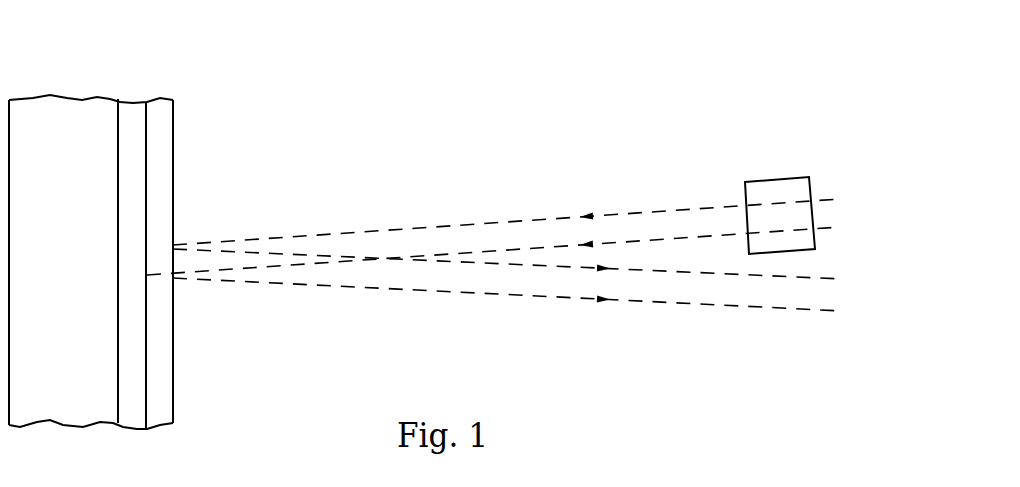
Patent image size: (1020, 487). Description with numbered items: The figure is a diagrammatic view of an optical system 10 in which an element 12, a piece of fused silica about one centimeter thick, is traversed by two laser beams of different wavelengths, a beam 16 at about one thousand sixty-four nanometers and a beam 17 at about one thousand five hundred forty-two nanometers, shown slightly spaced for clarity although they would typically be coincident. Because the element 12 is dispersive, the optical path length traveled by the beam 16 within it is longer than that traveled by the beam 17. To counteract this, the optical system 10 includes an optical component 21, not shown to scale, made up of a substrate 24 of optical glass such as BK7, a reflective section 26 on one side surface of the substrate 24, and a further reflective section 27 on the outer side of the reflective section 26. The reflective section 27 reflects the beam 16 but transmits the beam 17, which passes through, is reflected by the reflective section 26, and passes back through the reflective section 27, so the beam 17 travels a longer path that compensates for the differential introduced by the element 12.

The optical system 10 is at (633, 52).
The element 12 is at (776, 181).
The beam 16 is at (647, 212).
The beam 17 is at (832, 227).
The optical component 21 is at (70, 72).
The substrate 24 is at (77, 276).
The reflective section 26 is at (133, 101).
The reflective section 27 is at (160, 102).